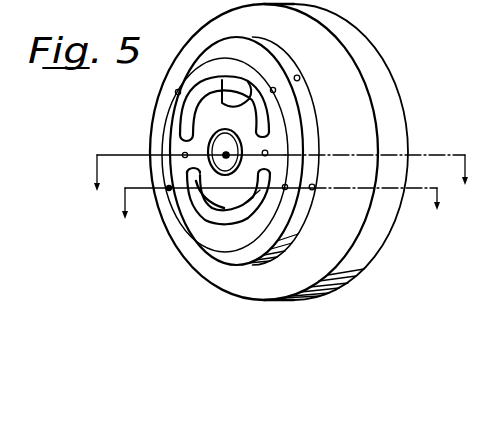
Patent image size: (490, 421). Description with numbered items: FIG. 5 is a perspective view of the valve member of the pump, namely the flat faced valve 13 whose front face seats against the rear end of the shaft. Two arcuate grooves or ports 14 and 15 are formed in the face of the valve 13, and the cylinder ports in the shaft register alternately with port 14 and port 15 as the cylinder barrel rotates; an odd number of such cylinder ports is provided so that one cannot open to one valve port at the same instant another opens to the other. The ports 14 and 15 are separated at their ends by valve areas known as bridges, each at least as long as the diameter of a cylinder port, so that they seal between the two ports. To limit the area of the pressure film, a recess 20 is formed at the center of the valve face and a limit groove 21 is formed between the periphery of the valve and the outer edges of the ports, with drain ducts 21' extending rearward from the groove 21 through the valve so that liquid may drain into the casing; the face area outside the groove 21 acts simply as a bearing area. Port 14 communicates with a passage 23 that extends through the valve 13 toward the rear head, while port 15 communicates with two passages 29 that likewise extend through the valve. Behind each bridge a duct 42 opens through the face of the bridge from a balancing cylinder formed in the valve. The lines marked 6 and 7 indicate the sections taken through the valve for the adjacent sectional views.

The section line 6- 6 is at (276, 187).
The section line 7- 7 is at (279, 221).
The valve 13 is at (372, 66).
The port 14 is at (195, 107).
The port 15 is at (203, 225).
The recess 20 is at (225, 152).
The limit groove 21 is at (207, 151).
The drain duct 21' is at (326, 146).
The passage 23 is at (236, 93).
The passage 29 is at (241, 203).
The duct 42 is at (266, 151).